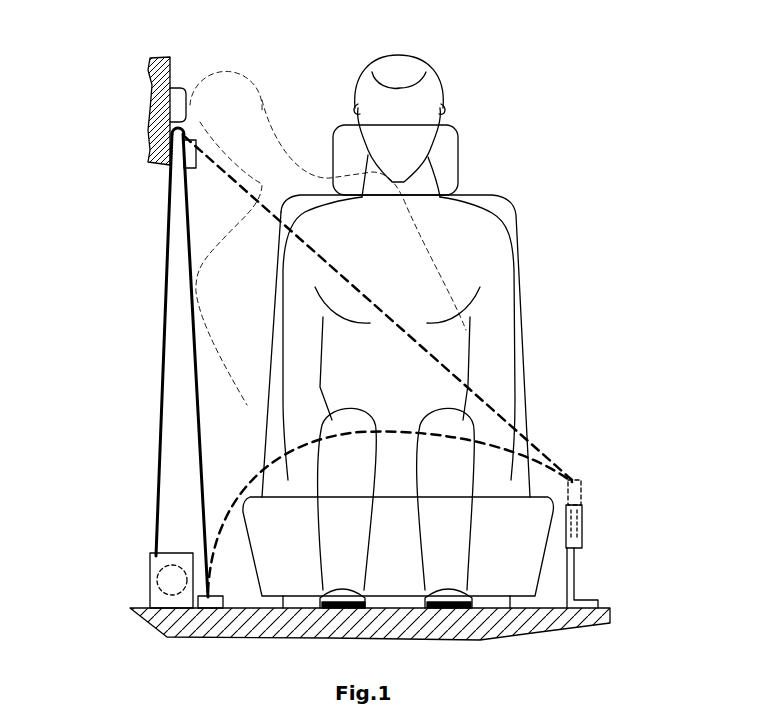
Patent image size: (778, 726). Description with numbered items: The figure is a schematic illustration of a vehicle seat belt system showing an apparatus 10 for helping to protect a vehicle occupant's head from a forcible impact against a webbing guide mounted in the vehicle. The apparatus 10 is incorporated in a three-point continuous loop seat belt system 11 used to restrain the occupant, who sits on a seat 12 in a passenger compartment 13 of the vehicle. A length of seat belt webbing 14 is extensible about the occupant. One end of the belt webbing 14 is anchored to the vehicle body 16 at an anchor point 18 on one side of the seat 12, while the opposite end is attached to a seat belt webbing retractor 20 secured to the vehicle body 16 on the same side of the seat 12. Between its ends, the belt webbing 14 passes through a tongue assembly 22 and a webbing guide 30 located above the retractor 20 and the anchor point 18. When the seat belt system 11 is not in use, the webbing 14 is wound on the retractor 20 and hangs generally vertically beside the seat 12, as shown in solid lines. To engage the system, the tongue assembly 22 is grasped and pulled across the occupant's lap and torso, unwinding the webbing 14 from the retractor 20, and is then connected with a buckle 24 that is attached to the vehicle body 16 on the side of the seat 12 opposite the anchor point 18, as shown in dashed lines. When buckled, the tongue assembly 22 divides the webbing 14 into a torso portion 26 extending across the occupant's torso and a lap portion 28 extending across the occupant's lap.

The apparatus 10 is at (147, 308).
The seat belt system 11 is at (123, 327).
The seat 12 is at (487, 212).
The passenger compartment 13 is at (399, 118).
The seat belt webbing 14 is at (150, 338).
The vehicle body 16 is at (166, 622).
The anchor point 18 is at (226, 598).
The seat belt webbing retractor 20 is at (150, 567).
The tongue assembly 22 is at (190, 158).
The buckle 24 is at (582, 546).
The torso portion 26 is at (463, 310).
The lap portion 28 is at (413, 425).
The webbing guide 30 is at (205, 94).